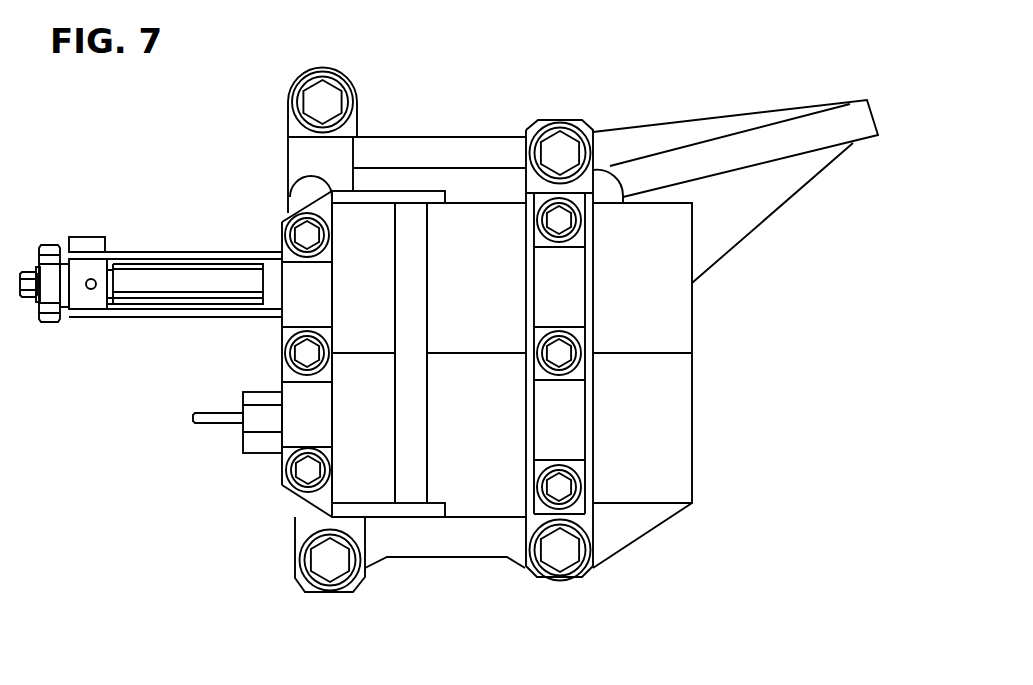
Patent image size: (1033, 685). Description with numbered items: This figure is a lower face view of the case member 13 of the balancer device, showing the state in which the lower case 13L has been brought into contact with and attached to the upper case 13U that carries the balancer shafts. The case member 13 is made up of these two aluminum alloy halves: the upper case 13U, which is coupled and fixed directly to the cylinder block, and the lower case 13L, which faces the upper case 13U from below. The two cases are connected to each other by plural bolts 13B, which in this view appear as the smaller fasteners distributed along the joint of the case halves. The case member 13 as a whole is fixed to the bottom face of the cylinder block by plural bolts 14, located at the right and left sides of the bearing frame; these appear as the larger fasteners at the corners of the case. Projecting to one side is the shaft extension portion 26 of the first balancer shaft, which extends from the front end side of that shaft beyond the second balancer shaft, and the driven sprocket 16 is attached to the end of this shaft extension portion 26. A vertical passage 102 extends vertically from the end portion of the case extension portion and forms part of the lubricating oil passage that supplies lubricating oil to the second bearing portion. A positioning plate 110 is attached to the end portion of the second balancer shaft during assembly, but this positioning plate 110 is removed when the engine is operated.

The case member 13 is at (374, 72).
The lower case 13L is at (373, 222).
The upper case 13U is at (493, 150).
The bolts 13B is at (303, 233).
The bolts 14 is at (315, 102).
The driven sprocket 16 is at (50, 255).
The shaft extension portion 26 is at (172, 277).
The vertical passage 102 is at (92, 290).
The positioning plate 110 is at (210, 425).